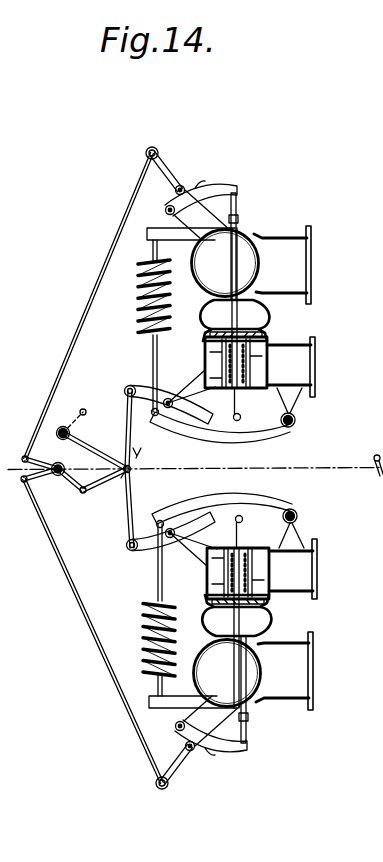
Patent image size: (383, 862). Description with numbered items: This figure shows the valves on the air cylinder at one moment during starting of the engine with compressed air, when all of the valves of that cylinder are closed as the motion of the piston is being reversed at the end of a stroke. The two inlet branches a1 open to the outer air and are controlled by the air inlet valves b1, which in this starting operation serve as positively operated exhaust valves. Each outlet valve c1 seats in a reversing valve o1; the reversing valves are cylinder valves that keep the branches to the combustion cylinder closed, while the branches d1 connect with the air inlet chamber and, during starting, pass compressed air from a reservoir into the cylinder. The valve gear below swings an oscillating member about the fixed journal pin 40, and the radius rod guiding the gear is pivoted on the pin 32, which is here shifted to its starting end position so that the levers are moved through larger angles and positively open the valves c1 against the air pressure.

The inlet branch a1 is at (300, 274).
The air inlet valve b1 is at (229, 671).
The outlet valve c1 is at (200, 626).
The reversing valve o1 is at (268, 339).
The branch connecting with the air inlet chamber d1 is at (303, 363).
The pin 32 is at (96, 454).
The fixed journal pin 40 is at (58, 476).